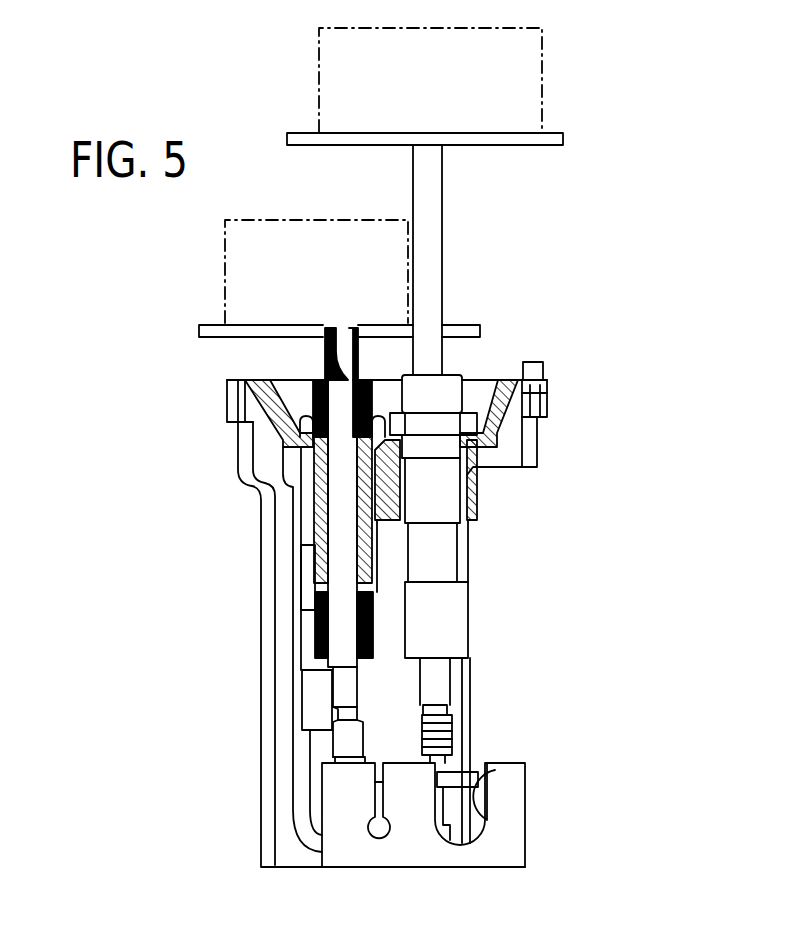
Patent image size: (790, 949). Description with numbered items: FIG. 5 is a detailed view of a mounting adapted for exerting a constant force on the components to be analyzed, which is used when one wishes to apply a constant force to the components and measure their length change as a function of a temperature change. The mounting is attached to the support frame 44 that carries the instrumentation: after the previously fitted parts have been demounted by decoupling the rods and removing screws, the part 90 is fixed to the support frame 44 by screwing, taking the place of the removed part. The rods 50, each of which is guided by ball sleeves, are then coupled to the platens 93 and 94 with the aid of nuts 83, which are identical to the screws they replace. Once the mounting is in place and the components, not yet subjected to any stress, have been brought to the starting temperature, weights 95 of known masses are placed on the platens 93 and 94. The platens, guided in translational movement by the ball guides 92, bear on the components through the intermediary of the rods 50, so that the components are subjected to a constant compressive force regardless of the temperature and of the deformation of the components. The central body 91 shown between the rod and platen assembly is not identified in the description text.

The weights 95 is at (327, 103).
The platen 94 is at (427, 241).
The platen 93 is at (217, 328).
The part 90 is at (502, 380).
The support frame 44 is at (527, 449).
The ball guides 92 is at (300, 437).
The central body 91 is at (455, 620).
The nuts 83 is at (423, 712).
The rod 50 is at (470, 740).